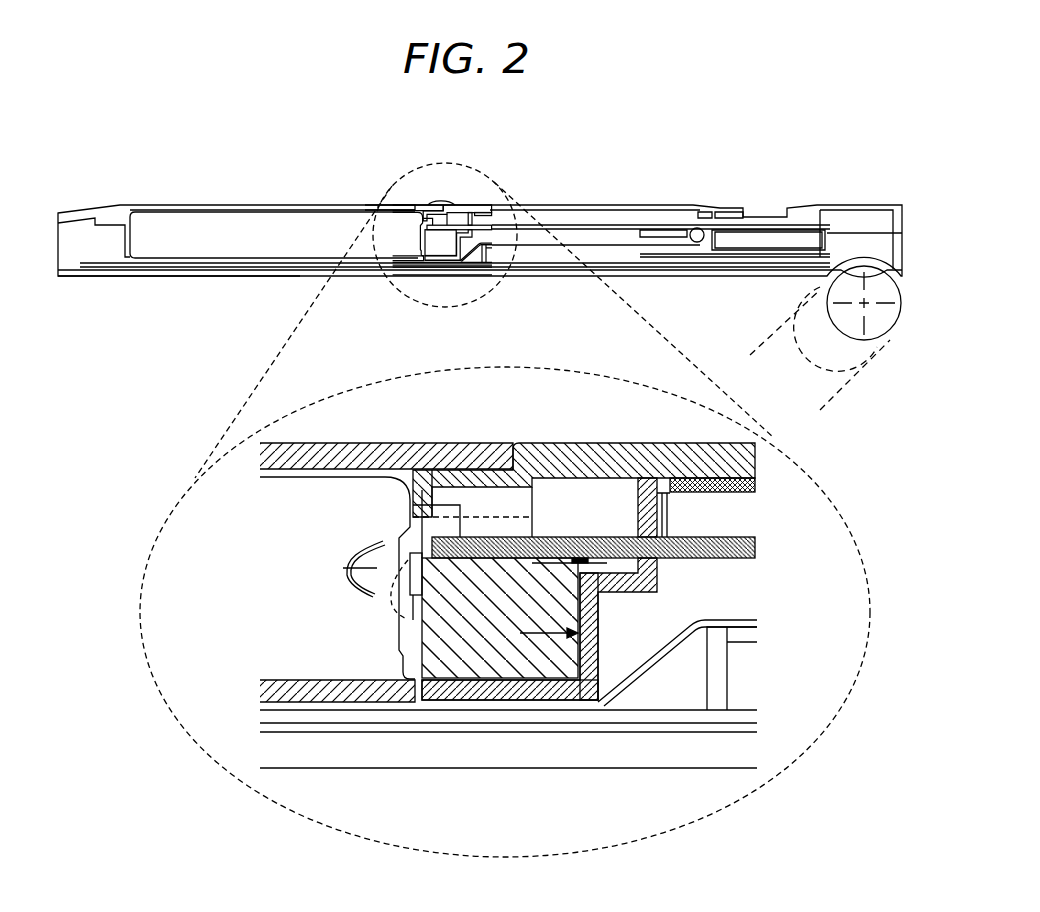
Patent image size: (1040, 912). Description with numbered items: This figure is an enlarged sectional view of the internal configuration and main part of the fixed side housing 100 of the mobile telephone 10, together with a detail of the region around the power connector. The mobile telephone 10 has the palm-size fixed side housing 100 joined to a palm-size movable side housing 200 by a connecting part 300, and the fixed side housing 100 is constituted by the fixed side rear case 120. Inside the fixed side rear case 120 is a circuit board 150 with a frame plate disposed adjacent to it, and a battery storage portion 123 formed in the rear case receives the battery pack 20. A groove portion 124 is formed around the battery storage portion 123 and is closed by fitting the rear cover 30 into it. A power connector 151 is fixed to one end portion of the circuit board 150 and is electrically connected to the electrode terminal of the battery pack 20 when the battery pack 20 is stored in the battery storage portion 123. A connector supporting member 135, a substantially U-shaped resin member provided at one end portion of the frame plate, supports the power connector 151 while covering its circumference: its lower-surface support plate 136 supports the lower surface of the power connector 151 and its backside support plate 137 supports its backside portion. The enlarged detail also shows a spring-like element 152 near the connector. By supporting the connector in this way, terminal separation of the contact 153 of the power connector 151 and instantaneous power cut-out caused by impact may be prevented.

The mobile telephone 10 is at (122, 276).
The battery pack 20 is at (205, 213).
The rear cover 30 is at (362, 204).
The fixed side housing 100 is at (138, 206).
The fixed side rear case 120 is at (289, 206).
The battery storage portion 123 is at (312, 678).
The groove portion 124 is at (437, 201).
The connector supporting member 135 is at (610, 652).
The lower-surface support plate 136 is at (522, 686).
The backside support plate 137 is at (571, 692).
The circuit board 150 is at (727, 550).
The power connector 151 is at (472, 663).
The spring contact 152 is at (383, 613).
The contact 153 is at (586, 558).
The movable side housing 200 is at (855, 368).
The connecting part 300 is at (892, 291).